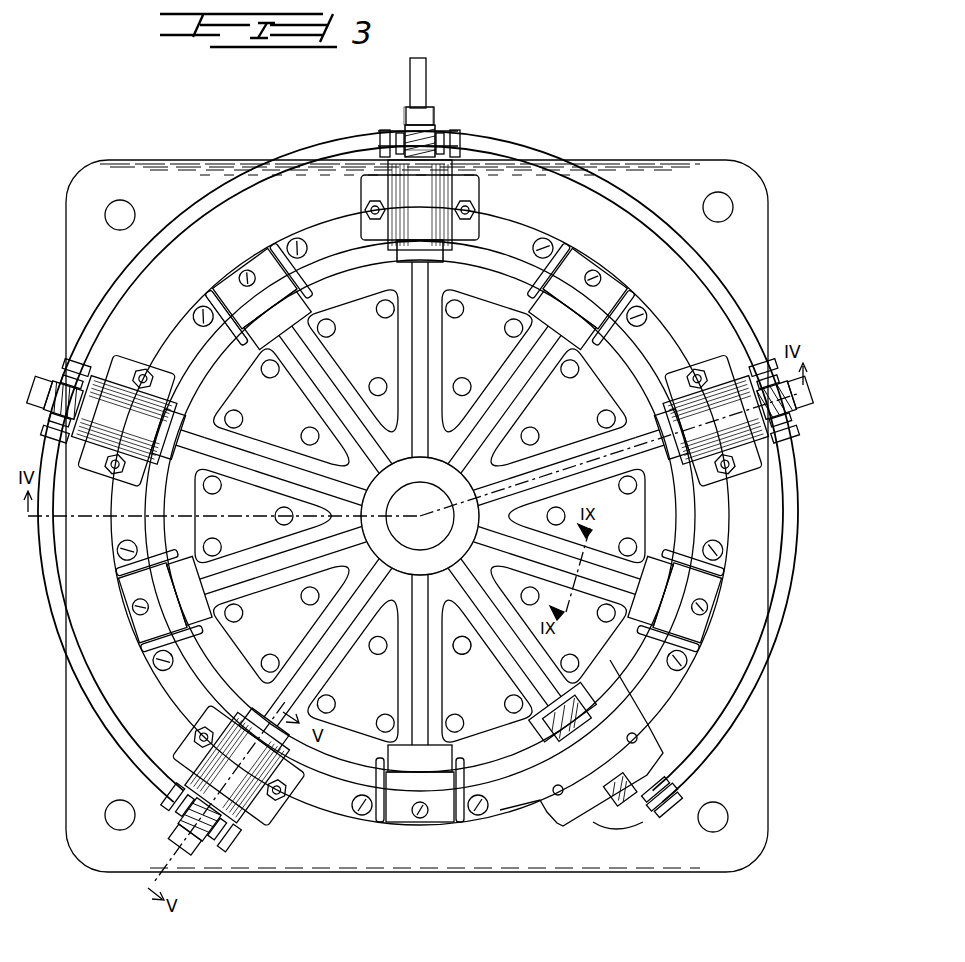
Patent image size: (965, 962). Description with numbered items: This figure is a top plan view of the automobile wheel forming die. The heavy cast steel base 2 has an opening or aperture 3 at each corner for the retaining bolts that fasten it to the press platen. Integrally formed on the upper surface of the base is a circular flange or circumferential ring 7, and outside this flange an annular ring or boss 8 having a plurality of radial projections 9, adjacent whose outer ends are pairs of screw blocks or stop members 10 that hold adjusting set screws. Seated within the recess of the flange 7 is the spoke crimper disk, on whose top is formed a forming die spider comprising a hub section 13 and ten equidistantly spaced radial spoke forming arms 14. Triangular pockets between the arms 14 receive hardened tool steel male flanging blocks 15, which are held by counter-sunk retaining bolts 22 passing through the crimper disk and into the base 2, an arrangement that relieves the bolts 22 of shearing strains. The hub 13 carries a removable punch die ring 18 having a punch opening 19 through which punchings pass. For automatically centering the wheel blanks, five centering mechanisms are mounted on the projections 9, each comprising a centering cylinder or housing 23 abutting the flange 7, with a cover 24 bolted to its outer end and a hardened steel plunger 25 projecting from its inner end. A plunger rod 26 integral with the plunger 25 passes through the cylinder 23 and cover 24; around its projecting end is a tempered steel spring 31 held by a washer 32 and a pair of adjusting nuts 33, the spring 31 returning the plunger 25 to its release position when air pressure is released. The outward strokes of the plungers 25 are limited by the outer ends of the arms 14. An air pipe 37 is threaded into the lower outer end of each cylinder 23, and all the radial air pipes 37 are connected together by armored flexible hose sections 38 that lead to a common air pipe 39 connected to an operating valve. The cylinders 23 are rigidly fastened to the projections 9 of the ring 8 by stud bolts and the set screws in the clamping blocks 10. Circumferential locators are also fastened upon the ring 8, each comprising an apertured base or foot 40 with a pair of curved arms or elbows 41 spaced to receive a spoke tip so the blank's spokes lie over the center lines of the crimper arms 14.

The base 2 is at (668, 160).
The opening or aperture 3 is at (728, 197).
The circular flange or circumferential ring 7 is at (200, 665).
The annular ring or boss 8 is at (190, 745).
The radial projections 9 is at (280, 806).
The screw blocks or stop members 10 is at (632, 812).
The hub section 13 is at (420, 524).
The spoke forming arms or crimper arms 14 is at (411, 352).
The male flanging blocks 15 is at (420, 516).
The punch die ring 18 is at (390, 548).
The punch opening 19 is at (430, 497).
The retaining bolts 22 is at (462, 656).
The centering cylinder or housing 23 is at (420, 197).
The cover 24 is at (450, 170).
The plunger 25 is at (448, 262).
The plunger rod 26 is at (395, 132).
The spring 31 is at (438, 150).
The washer 32 is at (432, 140).
The adjusting nuts 33 is at (426, 110).
The air pipe 37 is at (634, 790).
The armored flexible hose sections 38 is at (195, 214).
The common air pipe 39 is at (410, 80).
The apertured base or foot 40 is at (262, 262).
The curved arms or elbows 41 is at (300, 275).